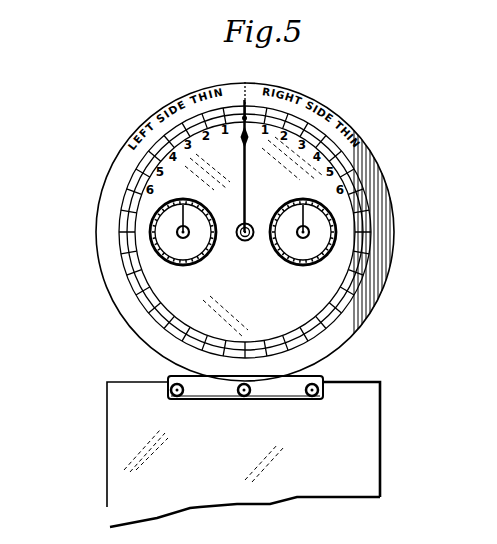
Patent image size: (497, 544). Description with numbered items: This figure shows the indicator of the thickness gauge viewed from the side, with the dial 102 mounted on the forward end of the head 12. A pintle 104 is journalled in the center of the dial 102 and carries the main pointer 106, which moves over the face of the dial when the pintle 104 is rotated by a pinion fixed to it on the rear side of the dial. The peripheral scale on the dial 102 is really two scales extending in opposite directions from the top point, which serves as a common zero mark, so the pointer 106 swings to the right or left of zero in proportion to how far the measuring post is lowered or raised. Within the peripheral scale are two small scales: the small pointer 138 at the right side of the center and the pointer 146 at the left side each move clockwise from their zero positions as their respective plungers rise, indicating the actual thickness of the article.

The dial 102 is at (372, 173).
The small pointer 138 is at (304, 226).
The pointer 146 is at (182, 218).
The pointer 106 is at (246, 204).
The pintle 104 is at (250, 241).
The head 12 is at (370, 467).